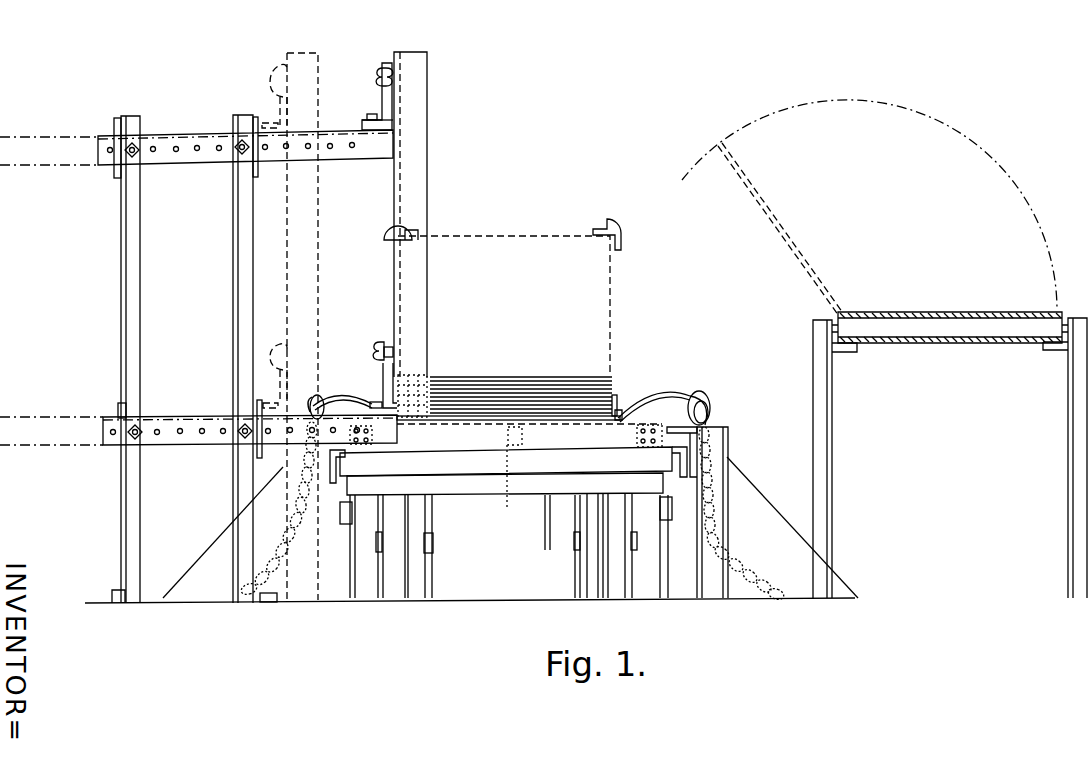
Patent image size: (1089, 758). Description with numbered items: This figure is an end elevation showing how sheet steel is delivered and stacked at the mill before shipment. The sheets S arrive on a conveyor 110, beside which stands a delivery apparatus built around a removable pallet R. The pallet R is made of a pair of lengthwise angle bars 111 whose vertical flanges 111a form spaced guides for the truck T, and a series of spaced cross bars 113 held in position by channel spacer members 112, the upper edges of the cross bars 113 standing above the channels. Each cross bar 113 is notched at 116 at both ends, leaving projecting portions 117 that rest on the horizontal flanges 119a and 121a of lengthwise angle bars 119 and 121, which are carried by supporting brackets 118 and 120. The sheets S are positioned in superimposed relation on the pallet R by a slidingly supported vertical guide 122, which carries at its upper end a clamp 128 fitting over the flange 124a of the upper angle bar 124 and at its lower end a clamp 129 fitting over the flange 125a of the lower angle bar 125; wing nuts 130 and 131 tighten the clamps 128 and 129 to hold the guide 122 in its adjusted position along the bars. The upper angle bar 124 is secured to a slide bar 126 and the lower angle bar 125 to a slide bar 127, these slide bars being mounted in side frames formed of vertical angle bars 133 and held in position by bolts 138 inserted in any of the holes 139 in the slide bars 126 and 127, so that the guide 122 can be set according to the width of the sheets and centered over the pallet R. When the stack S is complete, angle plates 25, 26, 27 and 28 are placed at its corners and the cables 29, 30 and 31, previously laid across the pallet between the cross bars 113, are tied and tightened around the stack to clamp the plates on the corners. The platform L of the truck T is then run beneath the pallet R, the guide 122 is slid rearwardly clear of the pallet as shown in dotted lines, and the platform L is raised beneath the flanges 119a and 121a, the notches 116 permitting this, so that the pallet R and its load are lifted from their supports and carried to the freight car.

The conveyor 110 is at (945, 338).
The angle bars 111 is at (332, 457).
The vertical flanges 111a is at (348, 463).
The channel spacer members 112 is at (516, 479).
The cross bars 113 is at (558, 433).
The notch 116 is at (662, 427).
The projecting portions 117 is at (372, 403).
The supporting bracket 118 is at (717, 587).
The angle bar 119 is at (697, 437).
The horizontal flange 119a is at (712, 416).
The supporting bracket 120 is at (300, 593).
The angle bar 121 is at (313, 475).
The horizontal flange 121a is at (312, 403).
The vertical guide 122 is at (417, 153).
The upper angle bar 124 is at (381, 130).
The vertical flange of upper angle bar 124a is at (392, 108).
The lower angle bar 125 is at (383, 397).
The vertical flange 125a is at (410, 377).
The upper slide bar 126 is at (175, 136).
The lower slide bar 127 is at (180, 417).
The upper clamp 128 is at (381, 108).
The lower clamp 129 is at (385, 363).
The wing nut 130 is at (380, 67).
The wing nut 131 is at (382, 342).
The vertical angle bar 133 is at (121, 240).
The bolt 138 is at (128, 157).
The holes 139 is at (218, 151).
The angle plate 25 is at (618, 412).
The angle plate 26 is at (410, 427).
The angle plate 27 is at (597, 228).
The angle plate 28 is at (415, 228).
The cable 29 is at (640, 403).
The cable 30 is at (700, 392).
The cable 31 is at (727, 523).
The sheets S is at (612, 303).
The truck platform L is at (485, 467).
The truck T is at (433, 515).
The pallet R is at (593, 437).